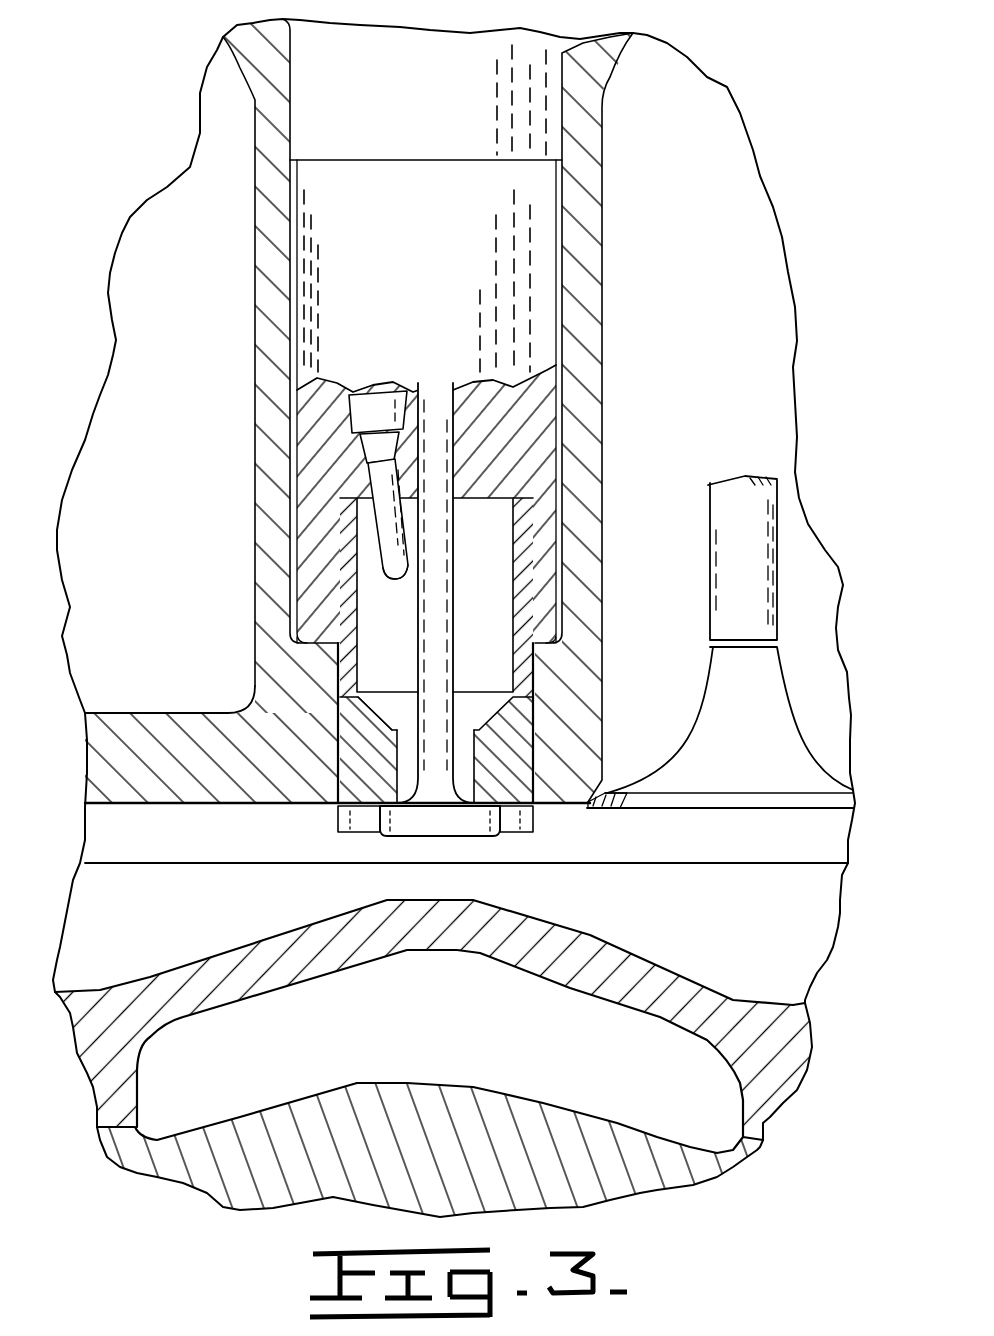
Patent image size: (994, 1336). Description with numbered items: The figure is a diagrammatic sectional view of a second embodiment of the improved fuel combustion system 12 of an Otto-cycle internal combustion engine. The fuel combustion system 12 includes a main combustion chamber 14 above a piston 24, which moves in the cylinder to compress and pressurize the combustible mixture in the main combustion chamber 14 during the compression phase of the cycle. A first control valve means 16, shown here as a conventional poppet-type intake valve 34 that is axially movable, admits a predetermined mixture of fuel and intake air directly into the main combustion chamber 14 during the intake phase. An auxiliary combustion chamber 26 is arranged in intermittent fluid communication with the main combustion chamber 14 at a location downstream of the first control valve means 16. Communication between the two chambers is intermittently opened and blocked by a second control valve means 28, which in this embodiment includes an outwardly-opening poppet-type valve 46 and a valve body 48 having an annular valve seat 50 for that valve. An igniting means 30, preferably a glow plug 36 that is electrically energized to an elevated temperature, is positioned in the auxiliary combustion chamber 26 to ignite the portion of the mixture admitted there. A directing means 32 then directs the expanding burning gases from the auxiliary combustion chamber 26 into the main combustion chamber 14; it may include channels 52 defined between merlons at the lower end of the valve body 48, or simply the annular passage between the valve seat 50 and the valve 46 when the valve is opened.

The fuel combustion system 12 is at (146, 150).
The main combustion chamber 14 is at (132, 933).
The first control valve means 16 is at (807, 567).
The piston 24 is at (683, 1180).
The auxiliary combustion chamber 26 is at (408, 631).
The second control valve means 28 is at (440, 487).
The igniting means 30 is at (325, 445).
The directing means 32 is at (345, 785).
The intake valve 34 is at (767, 660).
The glow plug 36 is at (380, 523).
The outwardly-opening poppet-type valve 46 is at (505, 451).
The valve body 48 is at (363, 742).
The annular valve seat 50 is at (490, 792).
The channel 52 is at (343, 840).